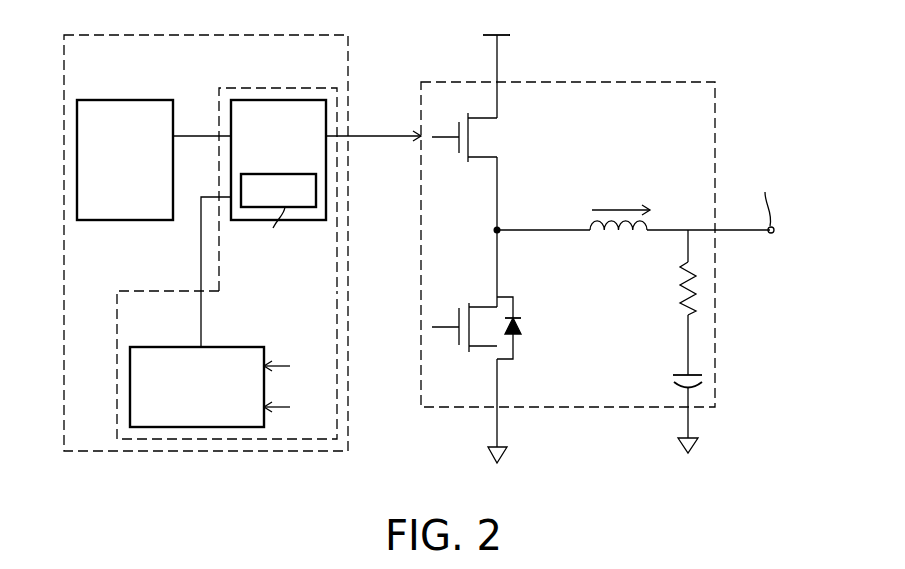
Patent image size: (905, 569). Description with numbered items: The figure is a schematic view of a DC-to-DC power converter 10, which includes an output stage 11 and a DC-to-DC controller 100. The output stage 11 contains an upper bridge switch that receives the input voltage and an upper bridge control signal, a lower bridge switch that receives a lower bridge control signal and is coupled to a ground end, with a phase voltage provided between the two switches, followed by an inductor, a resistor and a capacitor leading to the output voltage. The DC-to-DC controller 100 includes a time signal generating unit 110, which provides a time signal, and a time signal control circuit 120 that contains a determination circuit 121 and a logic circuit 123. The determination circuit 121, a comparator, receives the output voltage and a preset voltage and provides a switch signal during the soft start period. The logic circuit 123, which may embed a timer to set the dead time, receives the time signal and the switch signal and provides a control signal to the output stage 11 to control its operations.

The DC-to-DC power converter 10 is at (770, 487).
The DC-to-DC controller 100 is at (278, 453).
The time signal generating unit 110 is at (126, 100).
The logic circuit 123 is at (278, 100).
The time signal control circuit 120 is at (186, 441).
The determination circuit 121 is at (130, 388).
The output stage 11 is at (656, 80).